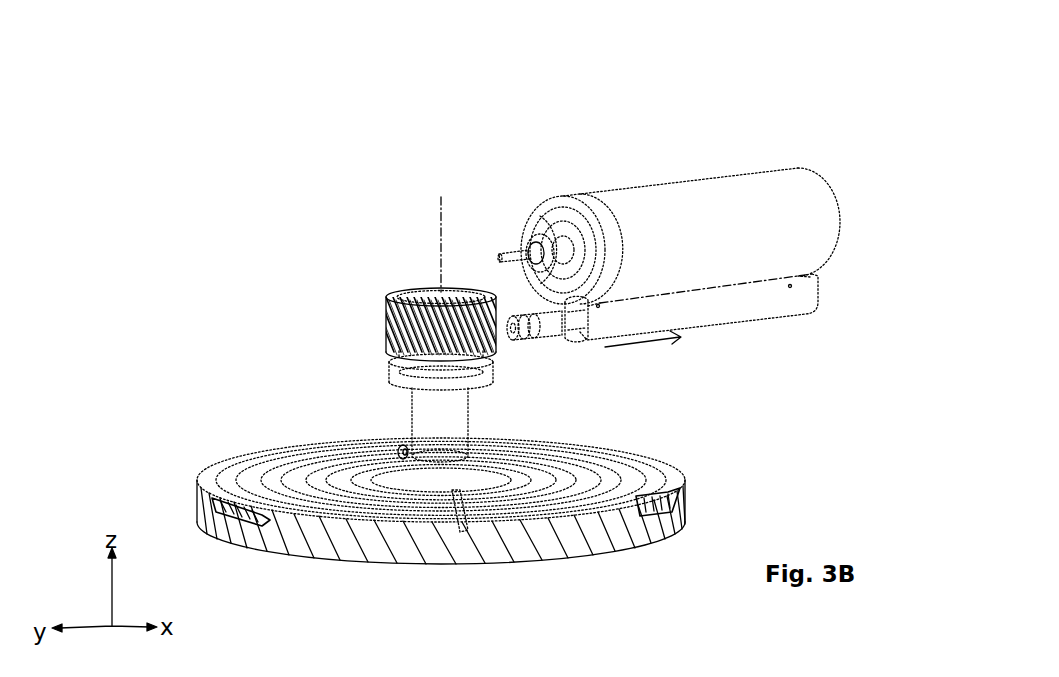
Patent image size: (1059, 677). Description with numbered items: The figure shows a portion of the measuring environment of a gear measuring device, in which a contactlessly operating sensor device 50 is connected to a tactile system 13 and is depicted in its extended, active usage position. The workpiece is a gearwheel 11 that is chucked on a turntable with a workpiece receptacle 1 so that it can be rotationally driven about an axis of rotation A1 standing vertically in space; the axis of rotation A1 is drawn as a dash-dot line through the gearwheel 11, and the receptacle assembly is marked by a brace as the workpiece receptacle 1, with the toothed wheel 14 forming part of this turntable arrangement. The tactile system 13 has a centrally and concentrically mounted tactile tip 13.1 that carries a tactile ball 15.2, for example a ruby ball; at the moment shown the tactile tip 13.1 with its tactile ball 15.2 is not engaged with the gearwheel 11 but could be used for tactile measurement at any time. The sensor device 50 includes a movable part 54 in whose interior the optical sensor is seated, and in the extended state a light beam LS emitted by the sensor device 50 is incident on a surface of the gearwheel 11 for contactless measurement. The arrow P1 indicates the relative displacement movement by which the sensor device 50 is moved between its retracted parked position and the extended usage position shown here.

The workpiece receptacle 1 is at (190, 390).
The gearwheel 11 is at (385, 326).
The tactile system 13 is at (697, 146).
The tactile tip 13.1 is at (513, 250).
The worm wheel 14 is at (660, 480).
The tactile ball 15.2 is at (500, 256).
The sensor device 50 is at (713, 302).
The movable part 54 is at (558, 330).
The light beam LS is at (500, 328).
The axis of rotation A1 is at (442, 232).
The relative displacement movement P1 is at (644, 350).